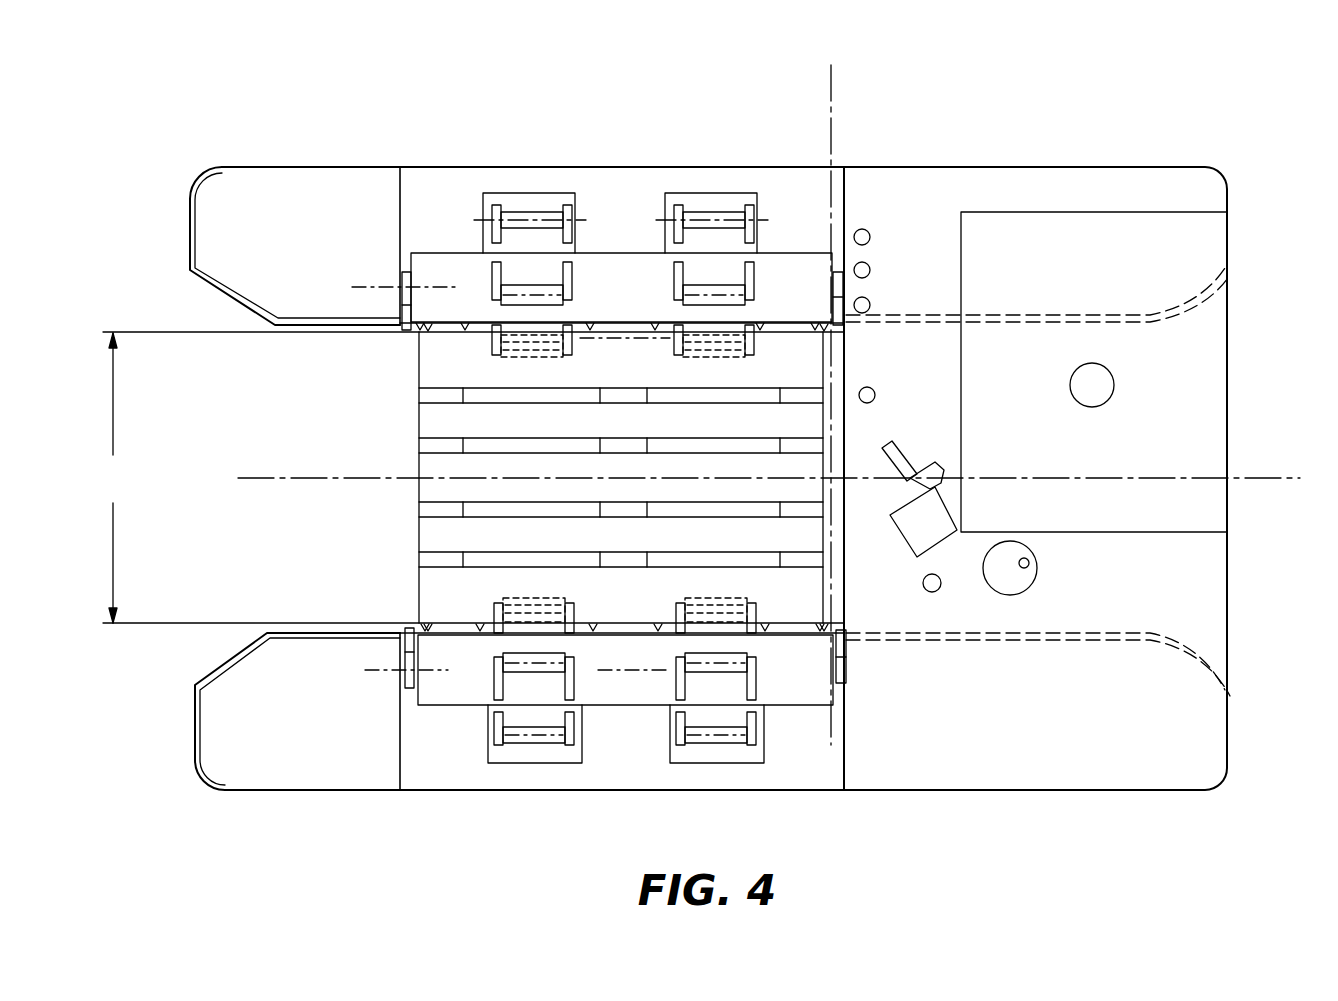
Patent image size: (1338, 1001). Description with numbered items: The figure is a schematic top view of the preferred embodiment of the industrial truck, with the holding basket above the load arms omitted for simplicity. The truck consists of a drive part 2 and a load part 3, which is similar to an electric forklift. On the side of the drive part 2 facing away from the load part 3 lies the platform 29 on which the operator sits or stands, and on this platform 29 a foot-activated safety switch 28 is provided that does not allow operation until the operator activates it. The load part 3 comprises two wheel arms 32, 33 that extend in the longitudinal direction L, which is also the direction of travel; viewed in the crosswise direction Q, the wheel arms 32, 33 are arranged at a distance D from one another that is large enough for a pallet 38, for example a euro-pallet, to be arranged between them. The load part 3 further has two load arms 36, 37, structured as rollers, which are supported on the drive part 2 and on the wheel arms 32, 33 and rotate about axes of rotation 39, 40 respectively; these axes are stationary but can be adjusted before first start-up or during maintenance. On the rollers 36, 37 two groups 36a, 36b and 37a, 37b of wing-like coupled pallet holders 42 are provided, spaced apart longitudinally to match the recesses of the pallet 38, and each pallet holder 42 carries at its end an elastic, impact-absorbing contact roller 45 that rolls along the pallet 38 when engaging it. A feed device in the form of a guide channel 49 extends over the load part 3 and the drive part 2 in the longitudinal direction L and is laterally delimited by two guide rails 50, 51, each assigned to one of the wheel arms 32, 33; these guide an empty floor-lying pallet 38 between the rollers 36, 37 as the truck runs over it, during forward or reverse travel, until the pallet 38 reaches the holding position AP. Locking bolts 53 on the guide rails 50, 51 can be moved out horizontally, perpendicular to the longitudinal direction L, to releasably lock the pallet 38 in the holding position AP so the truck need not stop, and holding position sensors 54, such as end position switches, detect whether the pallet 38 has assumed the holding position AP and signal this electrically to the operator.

The drive part 2 is at (988, 165).
The load part 3 is at (618, 167).
The foot-activated safety switch 28 is at (1105, 387).
The platform 29 is at (1217, 433).
The wheel arm 32 is at (250, 773).
The wheel arm 33 is at (223, 180).
The load arm 36 is at (797, 690).
The pallet holder group 36a is at (556, 668).
The pallet holder group 36b is at (714, 668).
The load arm 37 is at (800, 252).
The pallet holder group 37a is at (543, 287).
The pallet holder group 37b is at (716, 287).
The pallet 38 is at (630, 617).
The axis of rotation 39 is at (378, 672).
The axis of rotation 40 is at (370, 285).
The pallet holder 42 is at (736, 740).
The contact roller 45 is at (512, 745).
The guide channel 49 is at (1217, 594).
The guide rail 50 is at (192, 720).
The guide rail 51 is at (190, 220).
The locking bolt 53 is at (403, 330).
The holding position sensor 54 is at (428, 331).
The holding position AP is at (419, 536).
The distance D is at (112, 478).
The longitudinal direction L is at (781, 479).
The crosswise direction Q is at (828, 382).